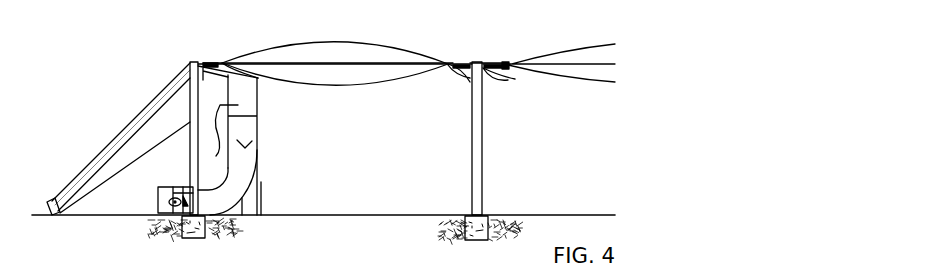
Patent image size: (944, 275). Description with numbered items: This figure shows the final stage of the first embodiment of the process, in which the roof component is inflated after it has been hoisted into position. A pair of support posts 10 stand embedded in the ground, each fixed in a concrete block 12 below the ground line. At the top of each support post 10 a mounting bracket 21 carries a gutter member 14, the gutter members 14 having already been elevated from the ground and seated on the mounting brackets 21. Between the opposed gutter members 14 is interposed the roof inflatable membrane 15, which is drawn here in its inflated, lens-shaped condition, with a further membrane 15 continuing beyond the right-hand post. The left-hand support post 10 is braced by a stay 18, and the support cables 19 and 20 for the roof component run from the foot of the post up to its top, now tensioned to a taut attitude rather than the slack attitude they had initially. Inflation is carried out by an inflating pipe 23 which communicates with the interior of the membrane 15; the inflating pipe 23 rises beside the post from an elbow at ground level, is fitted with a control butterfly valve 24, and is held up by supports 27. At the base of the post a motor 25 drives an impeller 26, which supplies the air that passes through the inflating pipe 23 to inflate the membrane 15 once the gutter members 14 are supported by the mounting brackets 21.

The support post 10 is at (480, 145).
The concrete block 12 is at (197, 241).
The gutter member 14 is at (214, 64).
The roof inflatable membrane 15 is at (380, 58).
The stay 18 is at (121, 168).
The support cable 19 is at (100, 157).
The support cable 20 is at (125, 127).
The mounting bracket 21 is at (484, 76).
The inflating pipe 23 is at (258, 124).
The control butterfly valve 24 is at (258, 155).
The motor 25 is at (170, 202).
The impeller 26 is at (182, 188).
The support 27 is at (262, 188).